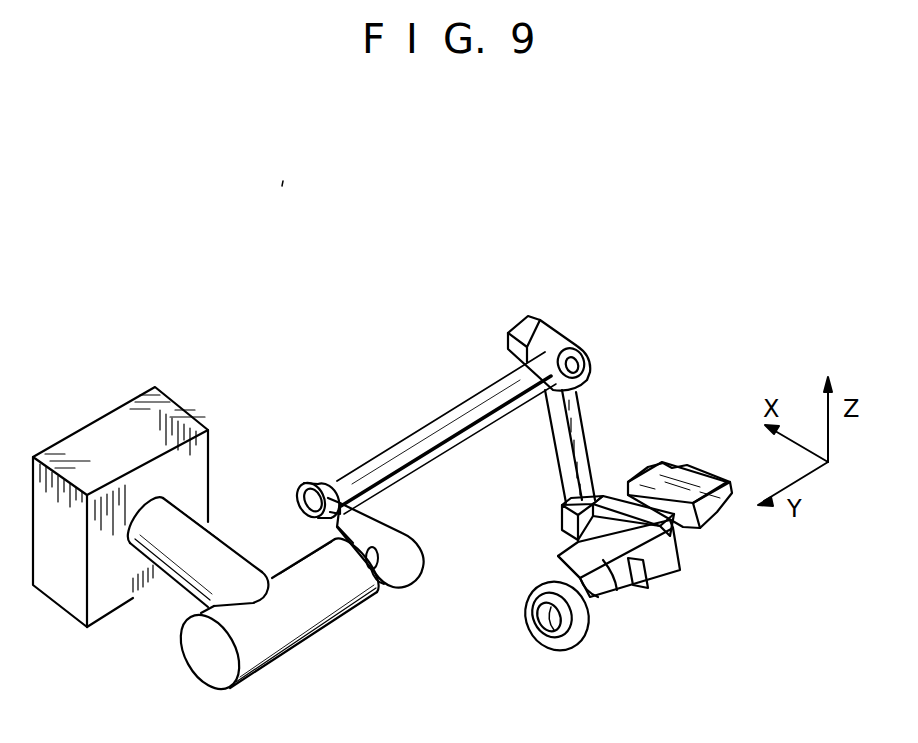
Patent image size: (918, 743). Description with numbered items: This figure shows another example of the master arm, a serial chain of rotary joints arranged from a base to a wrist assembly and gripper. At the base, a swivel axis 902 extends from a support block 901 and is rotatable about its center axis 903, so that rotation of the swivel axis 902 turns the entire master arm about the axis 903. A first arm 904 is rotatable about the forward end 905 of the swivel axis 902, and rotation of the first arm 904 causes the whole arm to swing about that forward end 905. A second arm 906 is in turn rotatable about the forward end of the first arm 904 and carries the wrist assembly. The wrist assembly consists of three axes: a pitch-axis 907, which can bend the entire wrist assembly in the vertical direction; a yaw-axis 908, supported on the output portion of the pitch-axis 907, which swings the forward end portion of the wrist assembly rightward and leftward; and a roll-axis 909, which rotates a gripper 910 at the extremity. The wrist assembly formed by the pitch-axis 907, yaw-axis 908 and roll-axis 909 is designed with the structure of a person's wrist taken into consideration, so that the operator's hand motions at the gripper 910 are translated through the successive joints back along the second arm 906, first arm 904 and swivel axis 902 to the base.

The cylinder 901 is at (303, 637).
The swivel axis 902 is at (403, 543).
The center axis 903 is at (377, 588).
The first arm 904 is at (440, 422).
The forward end of the swivel axis 905 is at (303, 487).
The second arm 906 is at (578, 430).
The pitch-axis 907 is at (560, 525).
The yaw-axis 908 is at (732, 458).
The roll-axis 909 is at (553, 627).
The gripper 910 is at (673, 577).